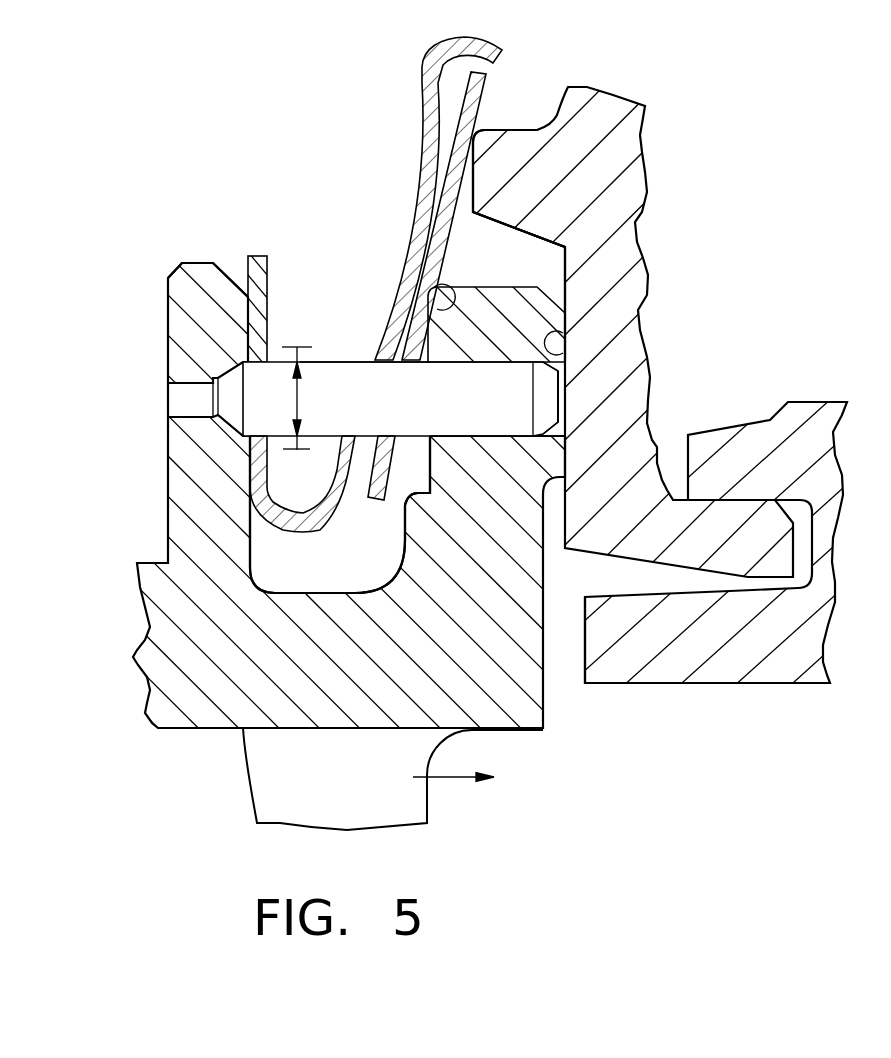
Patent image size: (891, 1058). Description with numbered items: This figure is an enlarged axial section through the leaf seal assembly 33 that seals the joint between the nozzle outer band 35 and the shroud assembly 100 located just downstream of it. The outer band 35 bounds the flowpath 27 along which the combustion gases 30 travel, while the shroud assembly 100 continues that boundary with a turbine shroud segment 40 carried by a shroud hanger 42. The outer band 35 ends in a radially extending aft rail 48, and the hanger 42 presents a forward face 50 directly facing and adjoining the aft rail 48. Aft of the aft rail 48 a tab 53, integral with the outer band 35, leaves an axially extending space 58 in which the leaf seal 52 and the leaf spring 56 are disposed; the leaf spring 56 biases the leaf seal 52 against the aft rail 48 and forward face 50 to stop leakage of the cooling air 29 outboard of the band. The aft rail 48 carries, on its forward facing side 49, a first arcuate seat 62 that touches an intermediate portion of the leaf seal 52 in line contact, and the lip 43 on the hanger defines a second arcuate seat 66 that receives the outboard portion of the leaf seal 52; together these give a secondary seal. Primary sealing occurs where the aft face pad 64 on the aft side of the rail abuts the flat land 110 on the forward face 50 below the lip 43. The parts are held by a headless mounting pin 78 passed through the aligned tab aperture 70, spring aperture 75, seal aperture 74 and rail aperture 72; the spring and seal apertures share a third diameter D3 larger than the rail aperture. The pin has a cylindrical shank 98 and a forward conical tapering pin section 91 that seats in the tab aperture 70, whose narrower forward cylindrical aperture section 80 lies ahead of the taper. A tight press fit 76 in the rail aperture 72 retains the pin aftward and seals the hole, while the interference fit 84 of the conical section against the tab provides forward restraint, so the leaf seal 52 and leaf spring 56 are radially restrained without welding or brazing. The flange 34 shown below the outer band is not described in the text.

The flowpath 27 is at (145, 798).
The cooling air 29 is at (303, 280).
The combustion gases 30 is at (450, 780).
The leaf seal assembly 33 is at (313, 195).
The flange 34 is at (326, 783).
The outer band 35 is at (340, 676).
The turbine shroud segment 40 is at (701, 652).
The shroud hanger 42 is at (593, 189).
The lip 43 is at (501, 181).
The aft rail 48 is at (470, 339).
The forward facing side 49 is at (427, 493).
The forward face 50 is at (548, 259).
The leaf seal 52 is at (420, 113).
The tab 53 is at (168, 320).
The leaf spring 56 is at (420, 144).
The space 58 is at (271, 576).
The first arcuate seat 62 is at (458, 297).
The aft face pad 64 is at (560, 318).
The second arcuate seat 66 is at (481, 133).
The tab aperture 70 is at (183, 393).
The rail aperture 72 is at (503, 433).
The seal aperture 74 is at (398, 447).
The spring aperture 75 is at (337, 447).
The press fit 76 is at (476, 420).
The mounting pin 78 is at (338, 336).
The forward cylindrical aperture section 80 is at (185, 414).
The interference fit 84 is at (247, 350).
The conical tapering pin section 91 is at (233, 418).
The cylindrical shank 98 is at (558, 410).
The shroud assembly 100 is at (740, 380).
The land 110 is at (556, 343).
The third diameter D3 is at (300, 397).